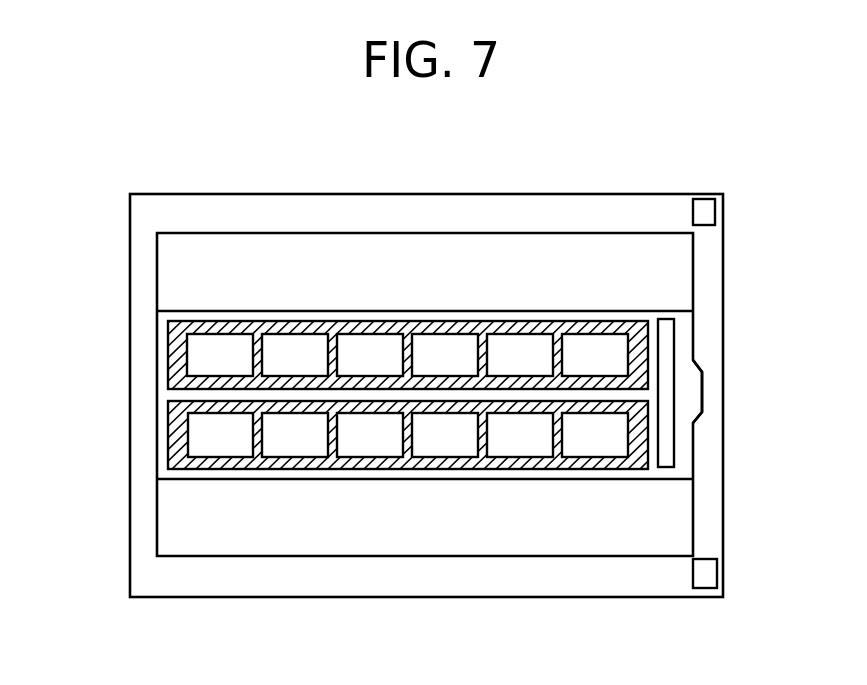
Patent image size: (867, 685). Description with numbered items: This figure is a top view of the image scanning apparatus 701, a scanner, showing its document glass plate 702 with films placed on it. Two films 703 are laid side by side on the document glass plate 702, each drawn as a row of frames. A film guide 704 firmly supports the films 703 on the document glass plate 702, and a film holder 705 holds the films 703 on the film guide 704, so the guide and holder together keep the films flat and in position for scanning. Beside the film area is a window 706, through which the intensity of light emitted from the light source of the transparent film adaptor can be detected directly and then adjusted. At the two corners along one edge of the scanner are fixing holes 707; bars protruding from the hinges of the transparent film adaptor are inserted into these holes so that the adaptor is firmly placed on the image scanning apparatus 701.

The image scanning apparatus 701 is at (440, 200).
The document glass plate 702 is at (167, 248).
The films 703 is at (443, 432).
The film guide 704 is at (693, 400).
The film holder 705 is at (168, 437).
The window 706 is at (668, 343).
The fixing holes 707 is at (705, 197).